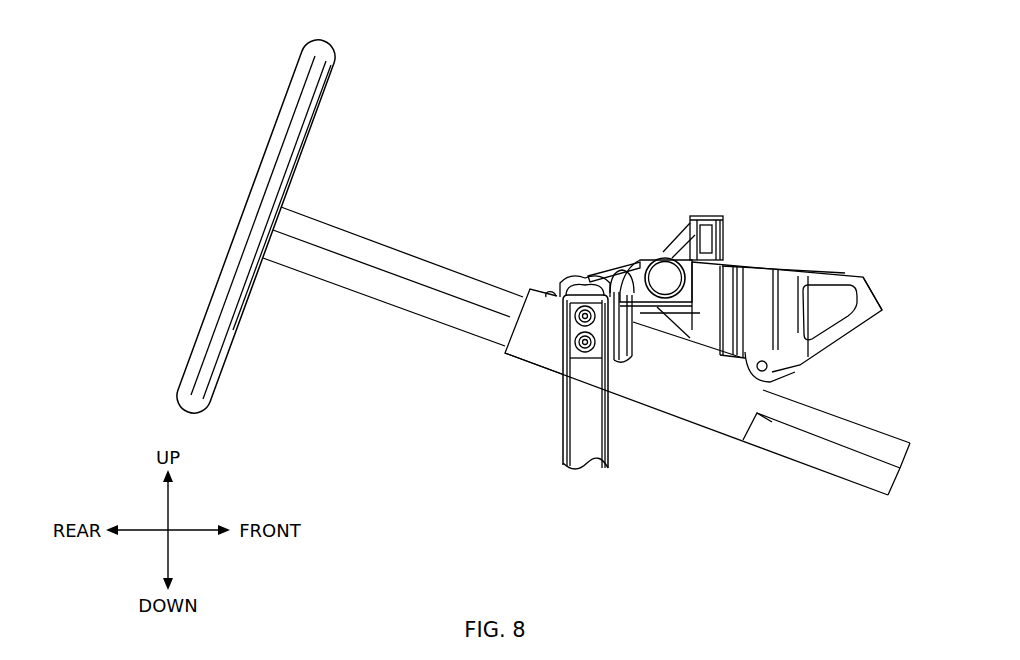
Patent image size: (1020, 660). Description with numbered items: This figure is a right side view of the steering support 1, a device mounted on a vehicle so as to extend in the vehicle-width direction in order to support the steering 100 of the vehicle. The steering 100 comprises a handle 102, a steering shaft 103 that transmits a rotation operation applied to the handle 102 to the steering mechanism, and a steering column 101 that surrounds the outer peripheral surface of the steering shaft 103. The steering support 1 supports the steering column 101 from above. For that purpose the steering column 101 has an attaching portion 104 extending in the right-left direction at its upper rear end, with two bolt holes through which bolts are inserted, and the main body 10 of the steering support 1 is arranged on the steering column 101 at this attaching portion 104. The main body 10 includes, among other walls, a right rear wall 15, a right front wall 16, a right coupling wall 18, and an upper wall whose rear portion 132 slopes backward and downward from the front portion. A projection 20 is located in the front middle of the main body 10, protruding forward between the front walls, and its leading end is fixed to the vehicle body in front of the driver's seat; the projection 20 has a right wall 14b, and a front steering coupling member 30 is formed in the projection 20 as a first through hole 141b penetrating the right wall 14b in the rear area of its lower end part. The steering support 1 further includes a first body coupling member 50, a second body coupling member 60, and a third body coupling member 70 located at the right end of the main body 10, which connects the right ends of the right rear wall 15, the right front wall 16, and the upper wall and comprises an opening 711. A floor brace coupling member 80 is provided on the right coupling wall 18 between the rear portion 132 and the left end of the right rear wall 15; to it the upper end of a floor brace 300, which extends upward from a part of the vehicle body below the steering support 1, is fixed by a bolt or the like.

The steering 100 is at (443, 61).
The steering support 1 is at (797, 165).
The main body 10 is at (606, 237).
The right coupling wall 18 is at (613, 278).
The right rear wall 15 is at (632, 274).
The third body coupling member 70 is at (649, 251).
The opening 711 is at (668, 248).
The second body coupling member 60 is at (709, 211).
The right front wall 16 is at (715, 283).
The projection 20 is at (818, 259).
The first body coupling member 50 is at (876, 288).
The right wall 14b is at (862, 316).
The front steering coupling member 30 is at (768, 367).
The first through hole 141b is at (763, 374).
The rear portion 132 is at (586, 283).
The attaching portion 104 is at (550, 297).
The steering shaft 103 is at (376, 298).
The handle 102 is at (207, 398).
The steering column 101 is at (522, 356).
The floor brace coupling member 80 is at (556, 316).
The floor brace 300 is at (610, 440).